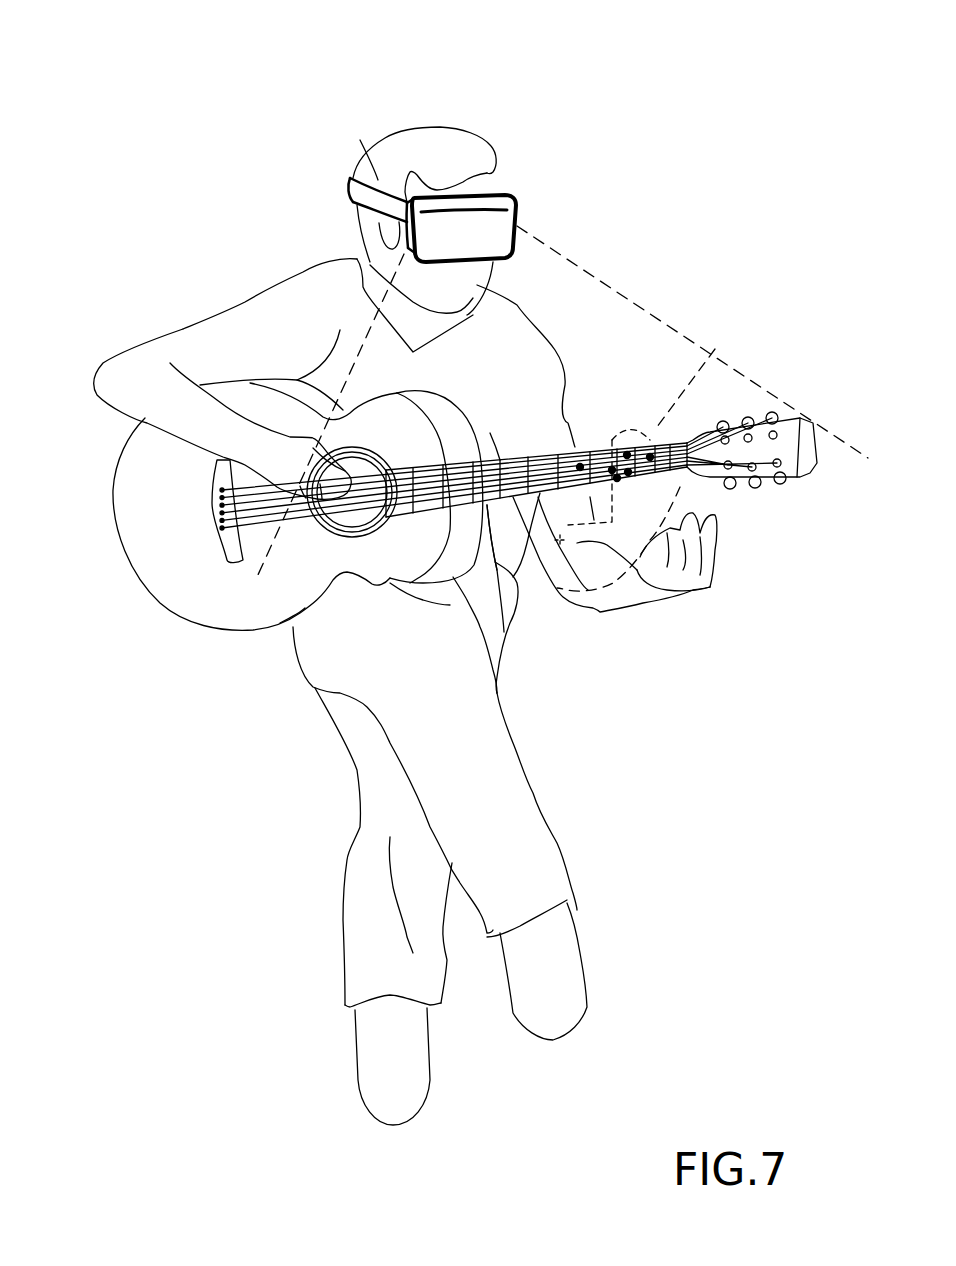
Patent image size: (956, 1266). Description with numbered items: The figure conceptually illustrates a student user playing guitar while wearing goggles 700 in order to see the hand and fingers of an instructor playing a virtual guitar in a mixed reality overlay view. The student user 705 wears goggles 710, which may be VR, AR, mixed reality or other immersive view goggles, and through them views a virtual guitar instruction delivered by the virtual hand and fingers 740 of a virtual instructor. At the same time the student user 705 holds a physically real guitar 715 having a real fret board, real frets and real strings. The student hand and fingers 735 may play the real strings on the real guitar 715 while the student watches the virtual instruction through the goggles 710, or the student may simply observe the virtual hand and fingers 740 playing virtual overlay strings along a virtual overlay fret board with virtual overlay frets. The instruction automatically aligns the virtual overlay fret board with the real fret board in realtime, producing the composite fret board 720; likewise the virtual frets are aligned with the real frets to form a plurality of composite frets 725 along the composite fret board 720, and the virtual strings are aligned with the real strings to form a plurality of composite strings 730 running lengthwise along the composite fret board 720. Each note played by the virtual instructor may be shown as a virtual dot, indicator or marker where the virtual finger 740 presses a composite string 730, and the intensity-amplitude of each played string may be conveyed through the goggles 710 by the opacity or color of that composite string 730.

The goggles 700 is at (149, 98).
The student user 705 is at (362, 143).
The goggles 710 is at (516, 194).
The real guitar 715 is at (220, 600).
The composite fret board 720 is at (600, 612).
The composite frets 725 is at (593, 447).
The composite strings 730 is at (507, 643).
The student hand and fingers 735 is at (717, 550).
The virtual hand and fingers 740 is at (715, 349).